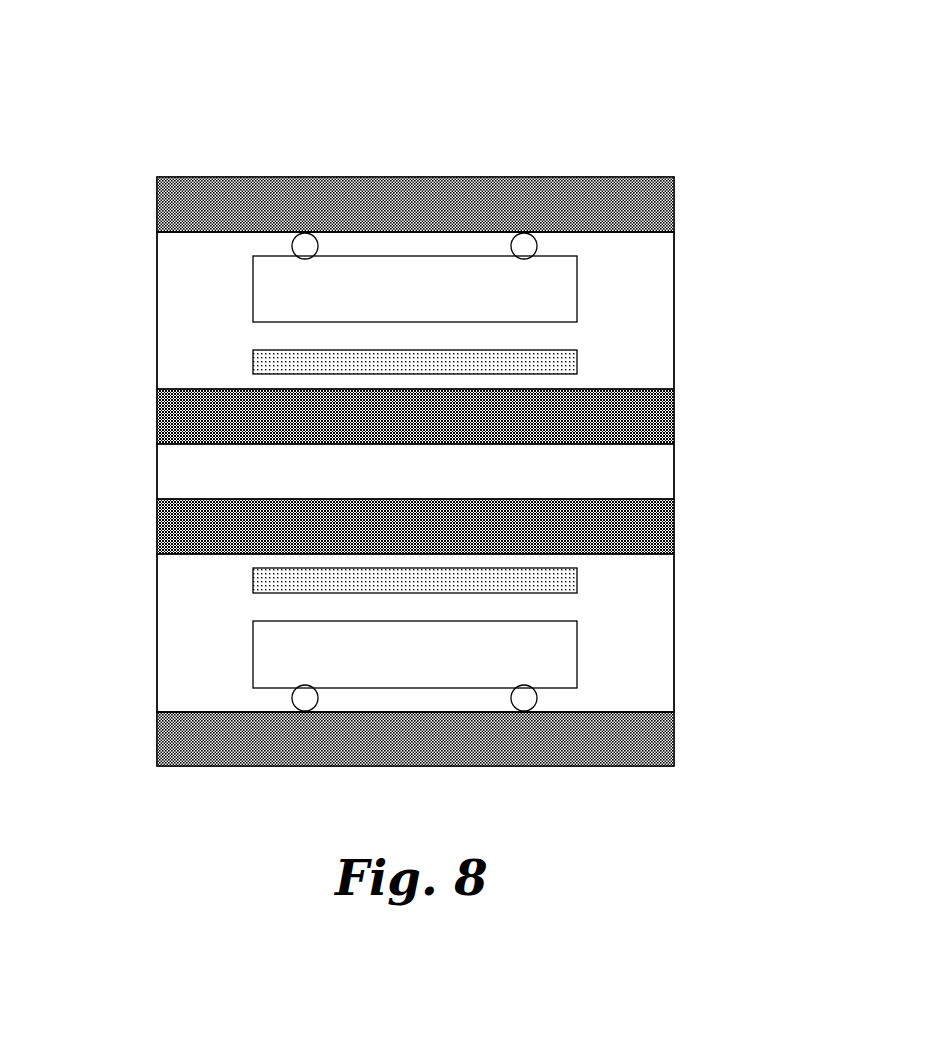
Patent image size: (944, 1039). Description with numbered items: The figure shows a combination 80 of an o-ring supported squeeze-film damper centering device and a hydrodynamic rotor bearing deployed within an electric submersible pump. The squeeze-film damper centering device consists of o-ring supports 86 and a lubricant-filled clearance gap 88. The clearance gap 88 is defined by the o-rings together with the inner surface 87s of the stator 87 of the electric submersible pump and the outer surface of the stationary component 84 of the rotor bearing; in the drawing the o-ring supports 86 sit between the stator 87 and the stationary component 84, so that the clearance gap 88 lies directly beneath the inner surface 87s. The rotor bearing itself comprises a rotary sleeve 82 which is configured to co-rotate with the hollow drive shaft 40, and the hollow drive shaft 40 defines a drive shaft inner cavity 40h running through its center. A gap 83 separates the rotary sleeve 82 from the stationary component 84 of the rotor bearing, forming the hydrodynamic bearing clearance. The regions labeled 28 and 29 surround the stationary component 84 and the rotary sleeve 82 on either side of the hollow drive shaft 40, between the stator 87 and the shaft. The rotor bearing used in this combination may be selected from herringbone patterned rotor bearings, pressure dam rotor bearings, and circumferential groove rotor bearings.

The combination 80 is at (678, 89).
The stator 87 is at (163, 195).
The inner surface of stator 87s is at (660, 243).
The o-ring supports 86 is at (292, 246).
The upper dielectric layer 28 is at (175, 299).
The lower dielectric layer 29 is at (618, 667).
The stationary component 84 is at (436, 296).
The gap 83 is at (560, 337).
The rotary sleeve 82 is at (570, 362).
The hollow drive shaft 40 is at (160, 416).
The drive shaft inner cavity 40h is at (158, 482).
The lubricant-filled clearance gap 88 is at (345, 243).